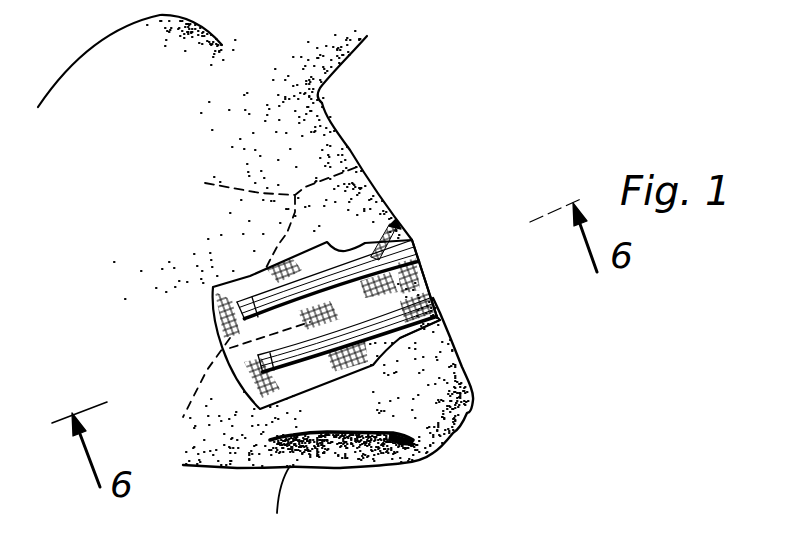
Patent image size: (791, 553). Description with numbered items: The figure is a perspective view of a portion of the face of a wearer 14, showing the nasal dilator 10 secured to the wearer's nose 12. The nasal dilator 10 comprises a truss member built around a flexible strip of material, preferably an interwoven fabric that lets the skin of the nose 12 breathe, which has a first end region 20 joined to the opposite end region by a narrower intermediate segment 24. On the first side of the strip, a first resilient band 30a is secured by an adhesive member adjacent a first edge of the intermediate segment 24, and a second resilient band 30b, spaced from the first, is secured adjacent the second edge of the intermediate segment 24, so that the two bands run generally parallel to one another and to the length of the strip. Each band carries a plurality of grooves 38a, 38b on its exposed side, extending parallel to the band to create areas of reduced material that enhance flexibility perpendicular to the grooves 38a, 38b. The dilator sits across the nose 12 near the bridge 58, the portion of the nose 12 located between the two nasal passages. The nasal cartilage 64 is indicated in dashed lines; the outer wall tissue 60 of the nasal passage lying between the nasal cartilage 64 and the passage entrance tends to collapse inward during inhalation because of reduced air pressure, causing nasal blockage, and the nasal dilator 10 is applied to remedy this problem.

The nasal dilator 10 is at (440, 276).
The nose 12 is at (486, 385).
The wearer 14 is at (383, 88).
The first end region 20 is at (255, 350).
The intermediate segment 24 is at (411, 257).
The first resilient band 30a is at (351, 271).
The second resilient band 30b is at (380, 325).
The grooves 38a is at (400, 219).
The grooves 38b is at (444, 312).
The bridge 58 is at (420, 325).
The outer wall tissue 60 is at (397, 373).
The nasal cartilage 64 is at (254, 292).